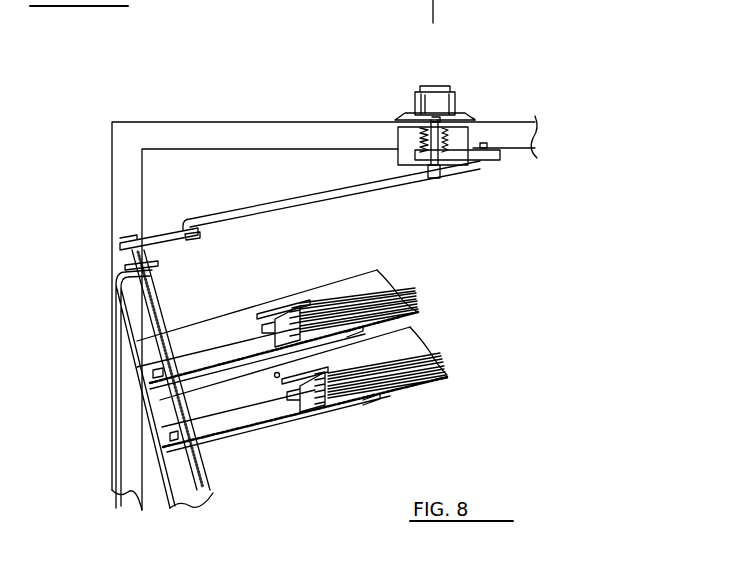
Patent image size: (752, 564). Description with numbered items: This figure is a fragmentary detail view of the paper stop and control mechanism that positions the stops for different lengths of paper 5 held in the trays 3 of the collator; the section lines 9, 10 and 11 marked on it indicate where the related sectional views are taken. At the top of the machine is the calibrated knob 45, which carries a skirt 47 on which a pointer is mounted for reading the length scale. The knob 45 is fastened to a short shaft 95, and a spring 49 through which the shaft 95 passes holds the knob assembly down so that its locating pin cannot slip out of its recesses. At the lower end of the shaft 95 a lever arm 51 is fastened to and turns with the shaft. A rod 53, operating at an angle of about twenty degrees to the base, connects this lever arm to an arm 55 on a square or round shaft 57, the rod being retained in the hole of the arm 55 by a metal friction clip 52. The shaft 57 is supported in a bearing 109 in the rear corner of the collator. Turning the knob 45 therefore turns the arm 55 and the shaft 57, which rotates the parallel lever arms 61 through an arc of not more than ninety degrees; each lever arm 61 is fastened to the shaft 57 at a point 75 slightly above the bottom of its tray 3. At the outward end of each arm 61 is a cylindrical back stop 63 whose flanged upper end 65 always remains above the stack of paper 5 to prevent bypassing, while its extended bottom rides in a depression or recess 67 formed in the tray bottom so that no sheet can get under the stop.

The tray 3 is at (412, 313).
The paper 5 is at (398, 300).
The section line 9- 9 is at (228, 175).
The section line 10- 10 is at (370, 59).
The section line 11- 11 is at (433, 208).
The knob 45 is at (415, 100).
The skirt 47 is at (467, 110).
The spring 49 is at (410, 140).
The lever arm 51 is at (496, 158).
The metal friction clip 52 is at (198, 237).
The rod 53 is at (386, 176).
The arm 55 is at (163, 233).
The shaft 57 is at (155, 307).
The lever arm 61 is at (202, 358).
The cylindrical part 63 is at (270, 327).
The flanged upper end 65 is at (286, 305).
The depression or recess 67 is at (152, 385).
The point 75 is at (163, 370).
The short shaft 95 is at (475, 118).
The bearing 109 is at (137, 284).